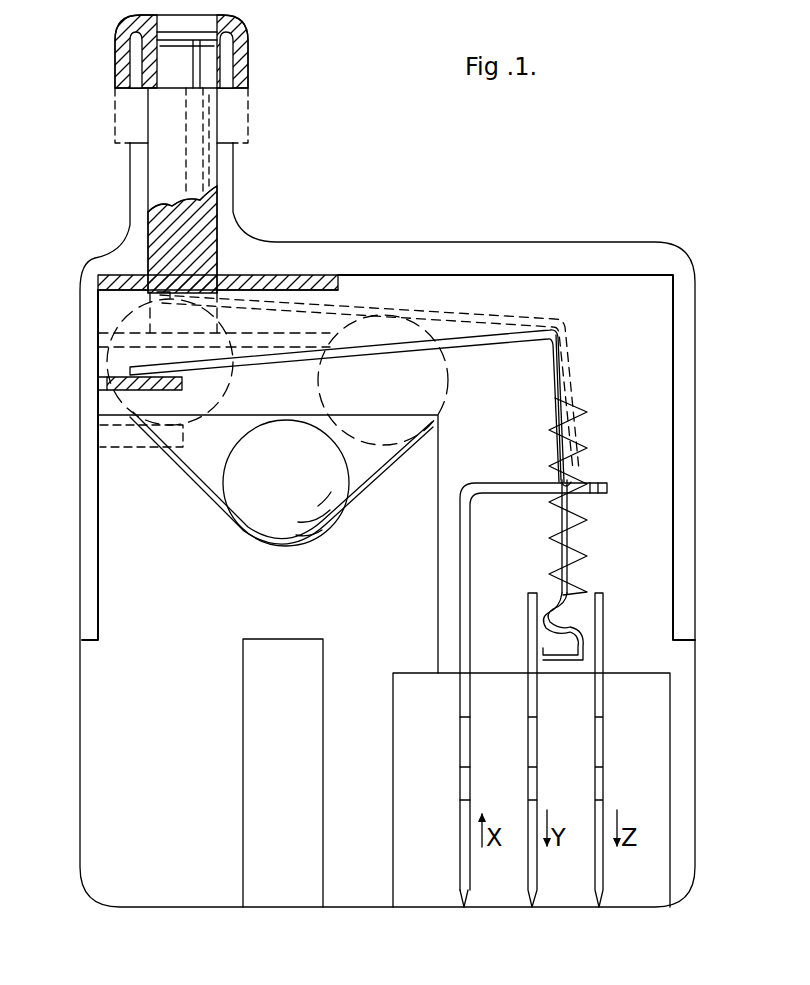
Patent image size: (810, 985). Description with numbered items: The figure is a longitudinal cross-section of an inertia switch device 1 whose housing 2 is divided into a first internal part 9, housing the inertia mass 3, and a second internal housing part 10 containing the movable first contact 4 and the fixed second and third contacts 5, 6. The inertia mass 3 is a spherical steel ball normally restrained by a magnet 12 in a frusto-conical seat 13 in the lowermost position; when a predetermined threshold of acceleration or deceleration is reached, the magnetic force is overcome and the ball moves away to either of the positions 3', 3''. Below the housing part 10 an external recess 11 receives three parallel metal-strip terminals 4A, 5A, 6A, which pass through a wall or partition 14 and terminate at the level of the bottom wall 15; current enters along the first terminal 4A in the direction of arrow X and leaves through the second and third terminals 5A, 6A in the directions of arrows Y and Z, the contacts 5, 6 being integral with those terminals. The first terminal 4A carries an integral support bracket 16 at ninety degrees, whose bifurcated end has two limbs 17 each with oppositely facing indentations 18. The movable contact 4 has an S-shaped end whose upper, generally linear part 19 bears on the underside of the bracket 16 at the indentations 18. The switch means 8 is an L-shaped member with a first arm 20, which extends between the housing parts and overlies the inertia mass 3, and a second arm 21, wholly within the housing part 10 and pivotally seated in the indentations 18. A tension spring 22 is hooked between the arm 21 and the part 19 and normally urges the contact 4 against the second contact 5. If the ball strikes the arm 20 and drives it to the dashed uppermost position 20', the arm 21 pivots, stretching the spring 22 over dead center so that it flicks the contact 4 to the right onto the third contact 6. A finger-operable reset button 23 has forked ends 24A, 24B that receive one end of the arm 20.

The inertia switch device 1 is at (60, 496).
The housing 2 is at (92, 560).
The inertia mass 3 is at (277, 501).
The displaced position of inertia mass 3' is at (214, 404).
The displaced position of inertia mass 3'' is at (414, 380).
The first movable electrical contact 4 is at (573, 593).
The first electrical terminal 4A is at (468, 892).
The second fixed electrical contact 5 is at (530, 628).
The second electrical terminal 5A is at (538, 892).
The third fixed electrical contact 6 is at (603, 620).
The third electrical terminal 6A is at (604, 892).
The switch means 8 is at (520, 312).
The first internal housing part 9 is at (157, 702).
The second internal housing part 10 is at (645, 431).
The external recess 11 is at (642, 812).
The magnet 12 is at (278, 787).
The frusto-conical seat 13 is at (372, 497).
The wall or partition 14 is at (657, 672).
The bottom wall 15 is at (362, 908).
The support bracket 16 is at (502, 490).
The limbs of support bracket 17 is at (598, 484).
The indentations 18 is at (562, 478).
The linear part of movable contact 19 is at (575, 545).
The first arm of switch means 20 is at (347, 325).
The uppermost position of first arm 20' is at (368, 319).
The second arm of switch means 21 is at (558, 368).
The tension spring 22 is at (573, 520).
The reset button 23 is at (193, 127).
The forked end of reset button 24A is at (310, 332).
The forked end of reset button 24B is at (128, 436).